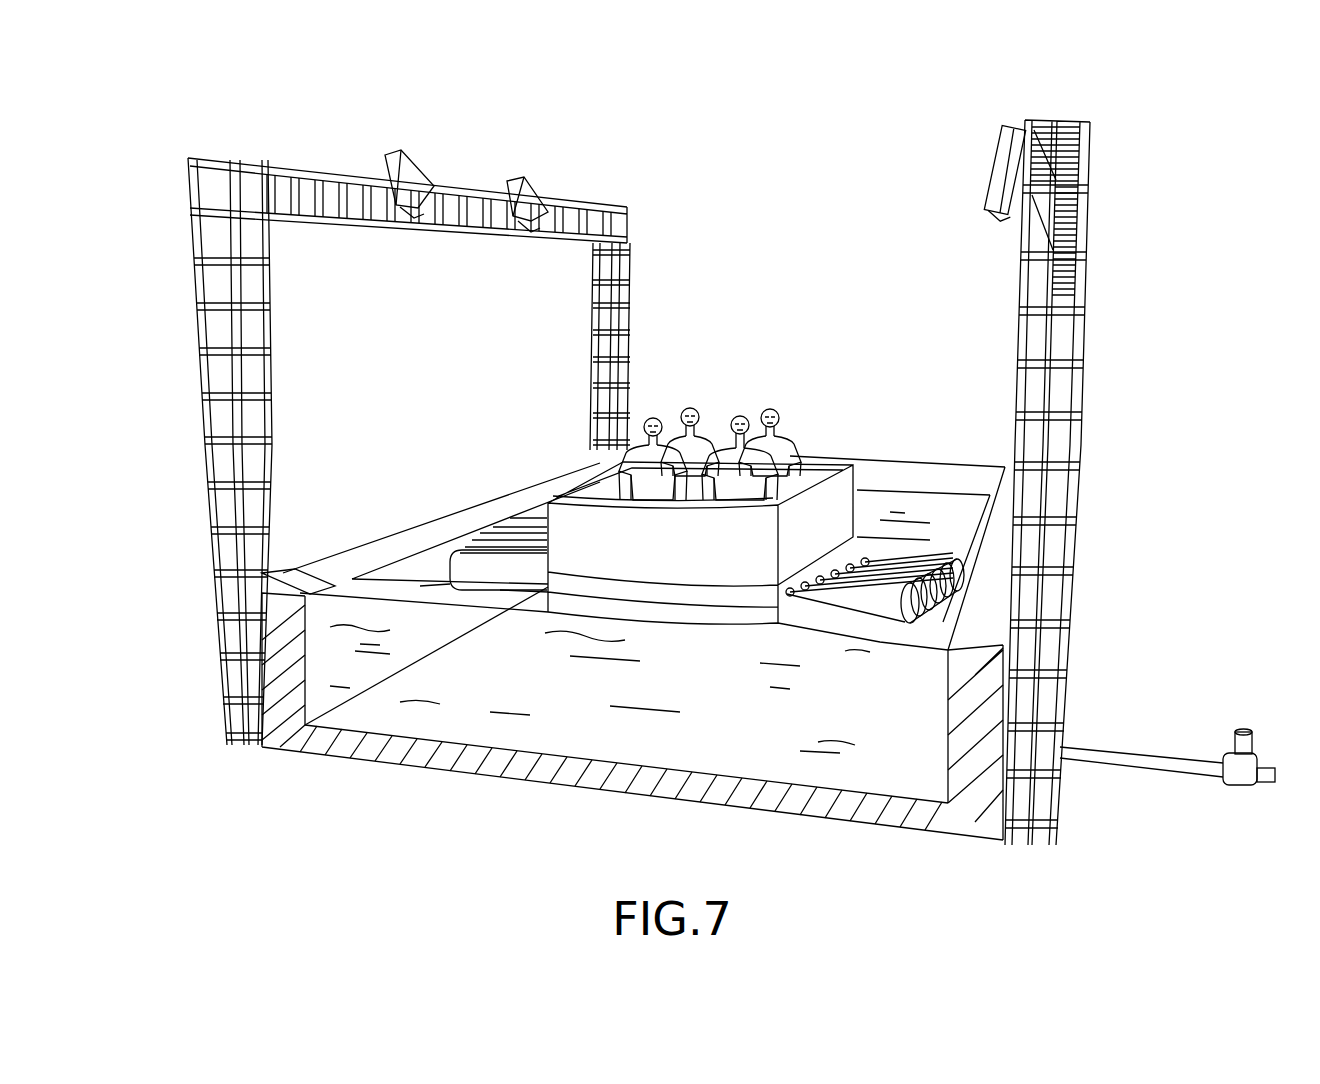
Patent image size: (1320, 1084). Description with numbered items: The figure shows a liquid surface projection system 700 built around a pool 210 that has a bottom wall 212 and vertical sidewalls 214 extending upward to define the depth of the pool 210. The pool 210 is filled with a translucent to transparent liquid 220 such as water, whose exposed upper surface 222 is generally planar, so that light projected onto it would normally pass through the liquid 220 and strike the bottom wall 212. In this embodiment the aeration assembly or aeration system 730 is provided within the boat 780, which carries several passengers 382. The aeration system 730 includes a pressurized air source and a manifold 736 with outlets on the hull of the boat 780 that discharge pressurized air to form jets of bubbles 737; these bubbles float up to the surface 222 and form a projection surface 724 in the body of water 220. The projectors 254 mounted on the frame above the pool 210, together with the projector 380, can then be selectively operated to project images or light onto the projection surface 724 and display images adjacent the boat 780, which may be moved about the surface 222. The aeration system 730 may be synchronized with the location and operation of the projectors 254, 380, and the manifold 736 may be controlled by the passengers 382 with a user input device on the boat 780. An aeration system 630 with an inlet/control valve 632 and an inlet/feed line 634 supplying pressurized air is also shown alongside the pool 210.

The liquid surface projection system 700 is at (1140, 145).
The pool 210 is at (252, 770).
The bottom wall 212 is at (343, 748).
The vertical sidewalls 214 is at (228, 700).
The liquid 220 is at (408, 729).
The upper surface 222 is at (290, 582).
The projectors 254 is at (510, 180).
The projector 380 is at (985, 190).
The passengers 382 is at (730, 415).
The projection surface 724 is at (935, 507).
The aeration system 730 is at (817, 622).
The manifold 736 is at (776, 622).
The jets of bubbles 737 is at (882, 620).
The boat 780 is at (865, 470).
The aeration system 630 is at (1167, 758).
The inlet/control valve 632 is at (1240, 780).
The inlet/feed line 634 is at (1100, 748).